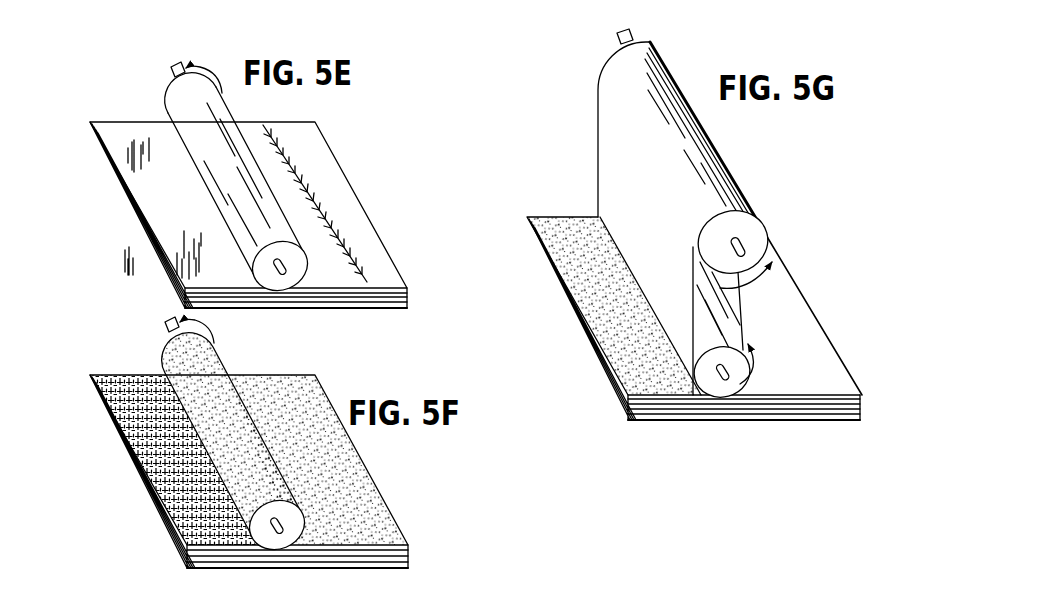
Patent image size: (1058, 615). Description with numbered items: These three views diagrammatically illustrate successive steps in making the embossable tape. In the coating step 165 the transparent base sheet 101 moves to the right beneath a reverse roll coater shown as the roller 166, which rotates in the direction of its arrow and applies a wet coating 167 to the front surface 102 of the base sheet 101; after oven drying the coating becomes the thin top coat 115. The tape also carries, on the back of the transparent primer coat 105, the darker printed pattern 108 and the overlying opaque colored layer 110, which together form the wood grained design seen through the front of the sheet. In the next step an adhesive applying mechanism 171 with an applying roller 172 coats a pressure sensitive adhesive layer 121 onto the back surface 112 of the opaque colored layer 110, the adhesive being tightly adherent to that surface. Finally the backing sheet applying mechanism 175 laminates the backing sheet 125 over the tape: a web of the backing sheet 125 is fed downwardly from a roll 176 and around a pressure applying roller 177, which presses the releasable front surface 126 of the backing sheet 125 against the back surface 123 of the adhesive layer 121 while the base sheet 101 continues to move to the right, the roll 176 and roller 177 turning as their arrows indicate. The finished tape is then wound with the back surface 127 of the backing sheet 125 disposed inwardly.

In FIG. 5E, the base sheet 101 is at (172, 264).
In FIG. 5F, the base sheet 101 is at (182, 548).
In FIG. 5G, the base sheet 101 is at (628, 412).
In FIG. 5E, the front surface of the base sheet 102 is at (202, 228).
In FIG. 5E, the primer coat 105 is at (401, 302).
In FIG. 5F, the primer coat 105 is at (409, 563).
In FIG. 5G, the primer coat 105 is at (808, 408).
In FIG. 5E, the printed pattern 108 is at (397, 305).
In FIG. 5F, the printed pattern 108 is at (409, 556).
In FIG. 5G, the printed pattern 108 is at (831, 405).
In FIG. 5E, the colored layer 110 is at (385, 312).
In FIG. 5F, the colored layer 110 is at (409, 548).
In FIG. 5G, the colored layer 110 is at (858, 405).
In FIG. 5F, the back surface of the colored layer 112 is at (188, 468).
In FIG. 5F, the top coat 115 is at (188, 562).
In FIG. 5G, the top coat 115 is at (652, 418).
In FIG. 5F, the adhesive layer 121 is at (332, 442).
In FIG. 5G, the adhesive layer 121 is at (612, 325).
In FIG. 5F, the back surface of the adhesive layer 123 is at (320, 463).
In FIG. 5G, the back surface of the adhesive layer 123 is at (601, 271).
In FIG. 5G, the backing sheet 125 is at (620, 172).
In FIG. 5G, the front surface of the backing sheet 126 is at (677, 265).
In FIG. 5G, the back surface of the backing sheet 127 is at (782, 325).
In FIG. 5E, the coating step 165 is at (140, 106).
In FIG. 5E, the roller 166 is at (209, 97).
In FIG. 5E, the coating 167 is at (320, 186).
In FIG. 5F, the adhesive applying mechanism 171 is at (147, 365).
In FIG. 5F, the applying roller 172 is at (215, 372).
In FIG. 5G, the backing sheet applying mechanism 175 is at (578, 148).
In FIG. 5G, the roll of backing sheet 176 is at (751, 232).
In FIG. 5G, the pressure applying roller 177 is at (744, 381).